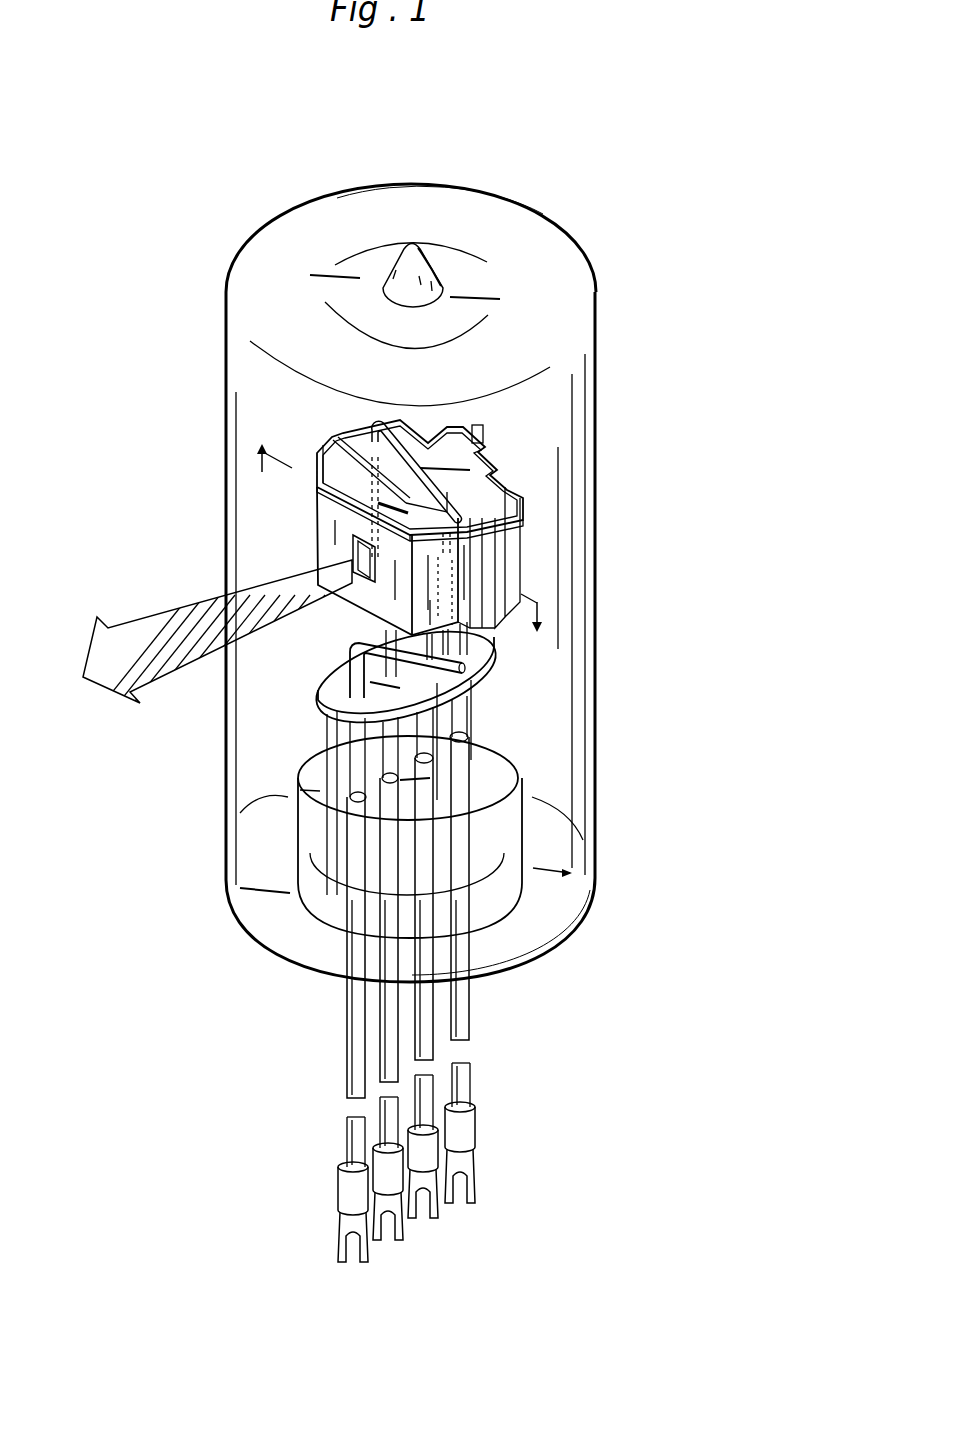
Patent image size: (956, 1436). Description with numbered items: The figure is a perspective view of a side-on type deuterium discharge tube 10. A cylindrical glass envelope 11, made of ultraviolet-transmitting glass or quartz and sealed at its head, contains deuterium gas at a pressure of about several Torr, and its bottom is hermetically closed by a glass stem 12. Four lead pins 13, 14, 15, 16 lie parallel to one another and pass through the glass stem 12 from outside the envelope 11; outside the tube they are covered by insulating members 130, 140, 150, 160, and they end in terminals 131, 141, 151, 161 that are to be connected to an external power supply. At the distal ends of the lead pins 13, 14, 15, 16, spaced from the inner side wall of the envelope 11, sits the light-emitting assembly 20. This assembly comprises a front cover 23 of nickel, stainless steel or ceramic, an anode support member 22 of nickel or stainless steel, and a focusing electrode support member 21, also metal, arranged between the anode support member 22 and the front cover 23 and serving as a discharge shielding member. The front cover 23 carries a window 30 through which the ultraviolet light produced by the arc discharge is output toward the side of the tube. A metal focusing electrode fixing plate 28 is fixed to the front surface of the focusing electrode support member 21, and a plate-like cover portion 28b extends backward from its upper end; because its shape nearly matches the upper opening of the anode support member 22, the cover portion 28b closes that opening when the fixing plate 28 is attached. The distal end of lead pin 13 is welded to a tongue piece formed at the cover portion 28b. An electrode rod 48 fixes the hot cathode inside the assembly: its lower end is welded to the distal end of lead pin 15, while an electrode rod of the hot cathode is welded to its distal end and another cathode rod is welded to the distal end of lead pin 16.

The deuterium discharge tube 10 is at (612, 204).
The glass envelope 11 is at (588, 372).
The glass stem 12 is at (493, 765).
The lead pin 13 is at (472, 425).
The lead pin 14 is at (430, 726).
The lead pin 15 is at (352, 765).
The lead pin 16 is at (345, 767).
The light-emitting assembly 20 is at (644, 438).
The focusing electrode support member 21 is at (497, 532).
The anode support member 22 is at (498, 470).
The front cover 23 is at (473, 577).
The focusing electrode fixing plate 28 is at (385, 487).
The cover portion 28b is at (375, 428).
The window 30 is at (340, 588).
The electrode rod 48 is at (408, 428).
The insulating member 130 is at (463, 1003).
The terminal 131 is at (470, 1187).
The insulating member 140 is at (437, 1023).
The terminal 141 is at (440, 1213).
The insulating member 150 is at (390, 1003).
The terminal 151 is at (403, 1240).
The insulating member 160 is at (353, 1067).
The terminal 161 is at (363, 1257).